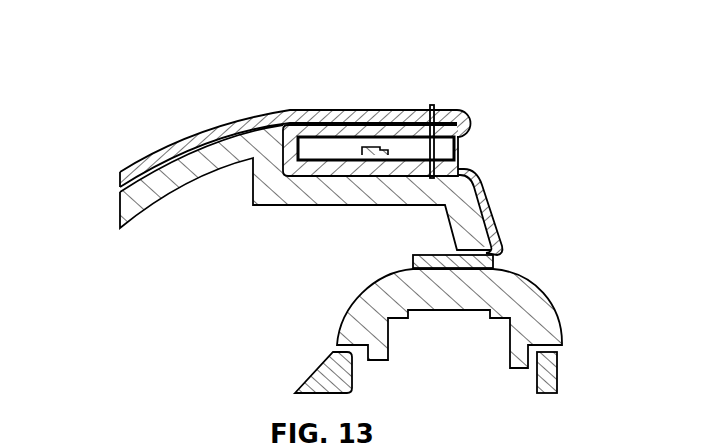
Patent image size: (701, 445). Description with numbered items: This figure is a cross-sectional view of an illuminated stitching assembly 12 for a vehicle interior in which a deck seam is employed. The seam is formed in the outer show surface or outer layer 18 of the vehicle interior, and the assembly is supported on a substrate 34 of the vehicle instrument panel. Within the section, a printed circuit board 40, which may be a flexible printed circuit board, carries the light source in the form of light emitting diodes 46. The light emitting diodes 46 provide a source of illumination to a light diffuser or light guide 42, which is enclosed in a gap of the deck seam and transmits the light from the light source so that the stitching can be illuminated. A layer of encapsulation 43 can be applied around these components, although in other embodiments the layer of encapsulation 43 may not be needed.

The illuminated stitching assembly 12 is at (148, 88).
The outer layer 18 is at (336, 110).
The substrate 34 is at (124, 212).
The printed circuit board 40 is at (349, 157).
The diffuser 42 is at (459, 148).
The layer of encapsulation 43 is at (463, 121).
The light emitting diodes 46 is at (372, 136).